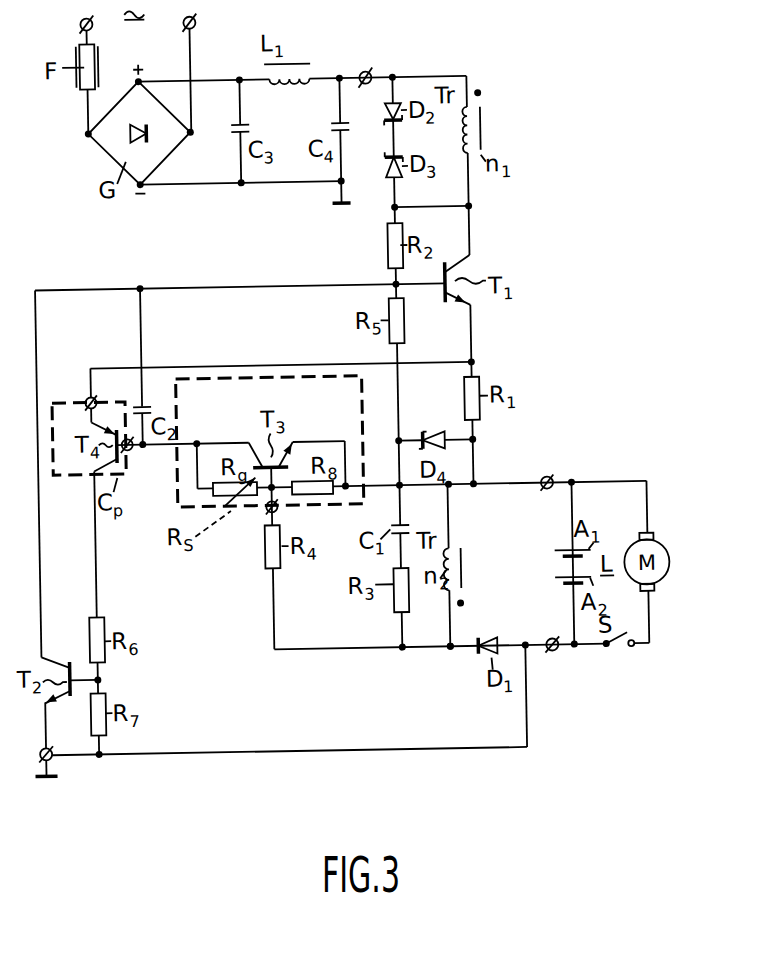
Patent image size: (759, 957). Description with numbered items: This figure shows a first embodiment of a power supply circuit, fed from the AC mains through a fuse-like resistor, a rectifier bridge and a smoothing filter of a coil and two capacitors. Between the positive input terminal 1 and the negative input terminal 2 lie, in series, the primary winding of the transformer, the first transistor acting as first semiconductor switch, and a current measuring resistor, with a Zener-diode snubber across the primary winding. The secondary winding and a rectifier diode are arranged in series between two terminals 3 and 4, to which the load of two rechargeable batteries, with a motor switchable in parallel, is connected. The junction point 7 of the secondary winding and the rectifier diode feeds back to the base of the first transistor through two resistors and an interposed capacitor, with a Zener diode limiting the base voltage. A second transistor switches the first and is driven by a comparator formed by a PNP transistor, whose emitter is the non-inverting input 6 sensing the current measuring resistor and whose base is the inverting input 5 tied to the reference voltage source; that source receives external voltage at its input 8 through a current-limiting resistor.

The positive input terminal 1 is at (373, 66).
The negative input terminal 2 is at (35, 745).
The terminal 3 is at (544, 480).
The terminal 4 is at (551, 657).
The inverting input 5 is at (129, 448).
The non-inverting input 6 is at (87, 393).
The junction point 7 is at (446, 656).
The input of the reference voltage source 8 is at (262, 514).